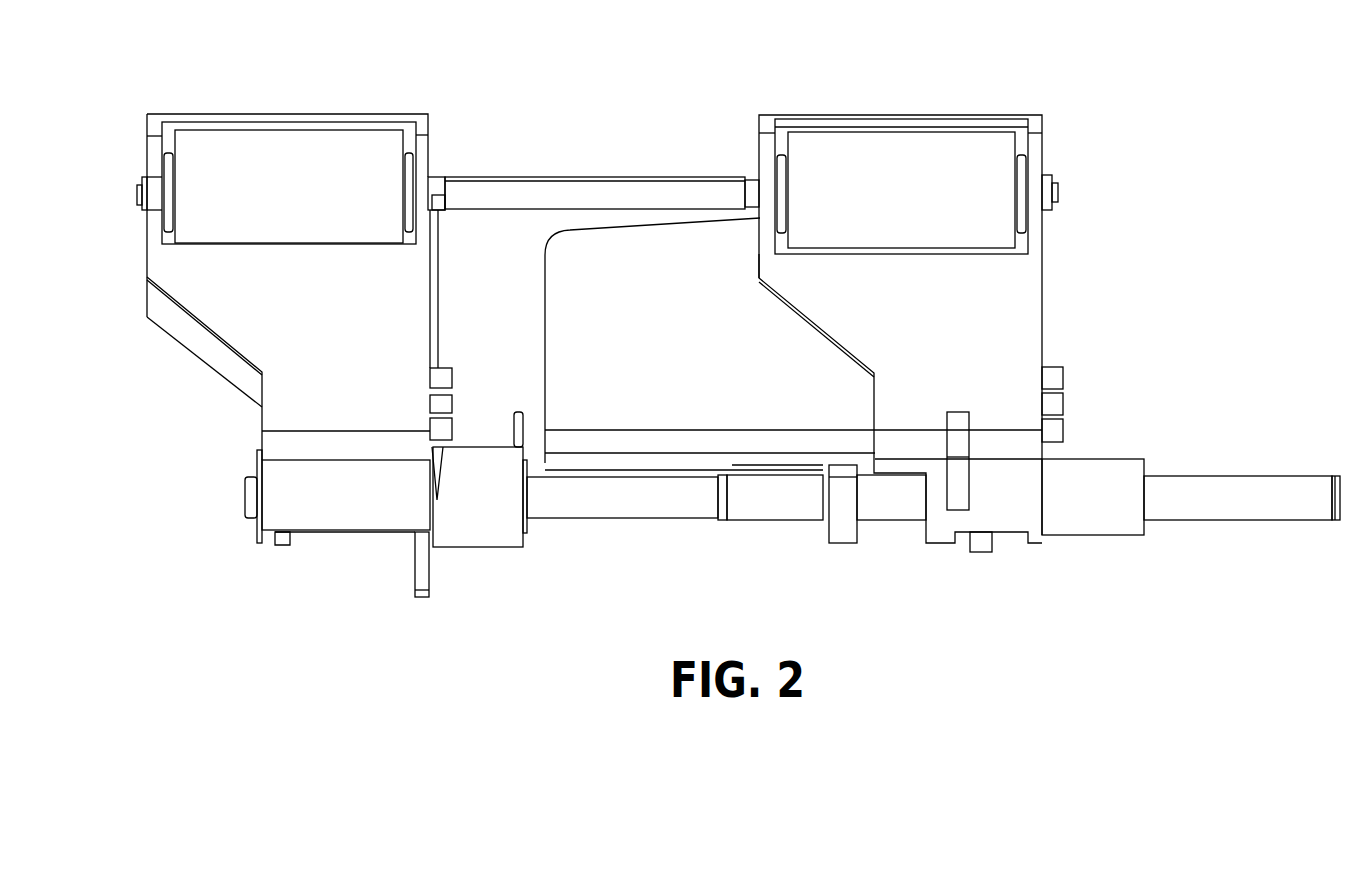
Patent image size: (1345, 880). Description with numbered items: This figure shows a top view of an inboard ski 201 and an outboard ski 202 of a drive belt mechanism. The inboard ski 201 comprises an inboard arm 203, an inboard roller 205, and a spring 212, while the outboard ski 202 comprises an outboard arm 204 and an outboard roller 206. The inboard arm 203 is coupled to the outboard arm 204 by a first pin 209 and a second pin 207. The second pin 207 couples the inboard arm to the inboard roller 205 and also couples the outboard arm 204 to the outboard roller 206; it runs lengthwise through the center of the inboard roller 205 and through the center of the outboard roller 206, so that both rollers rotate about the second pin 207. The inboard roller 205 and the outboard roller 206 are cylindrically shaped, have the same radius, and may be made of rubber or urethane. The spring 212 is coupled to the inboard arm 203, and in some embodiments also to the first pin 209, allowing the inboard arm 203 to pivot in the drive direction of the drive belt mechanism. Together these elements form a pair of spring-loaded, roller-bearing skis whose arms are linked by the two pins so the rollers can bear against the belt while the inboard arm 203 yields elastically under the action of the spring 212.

The inboard ski 201 is at (138, 350).
The outboard ski 202 is at (1067, 319).
The inboard arm 203 is at (288, 335).
The outboard arm 204 is at (863, 327).
The inboard roller 205 is at (297, 157).
The outboard roller 206 is at (915, 162).
The second pin 207 is at (138, 193).
The first pin 209 is at (1250, 503).
The spring 212 is at (483, 420).